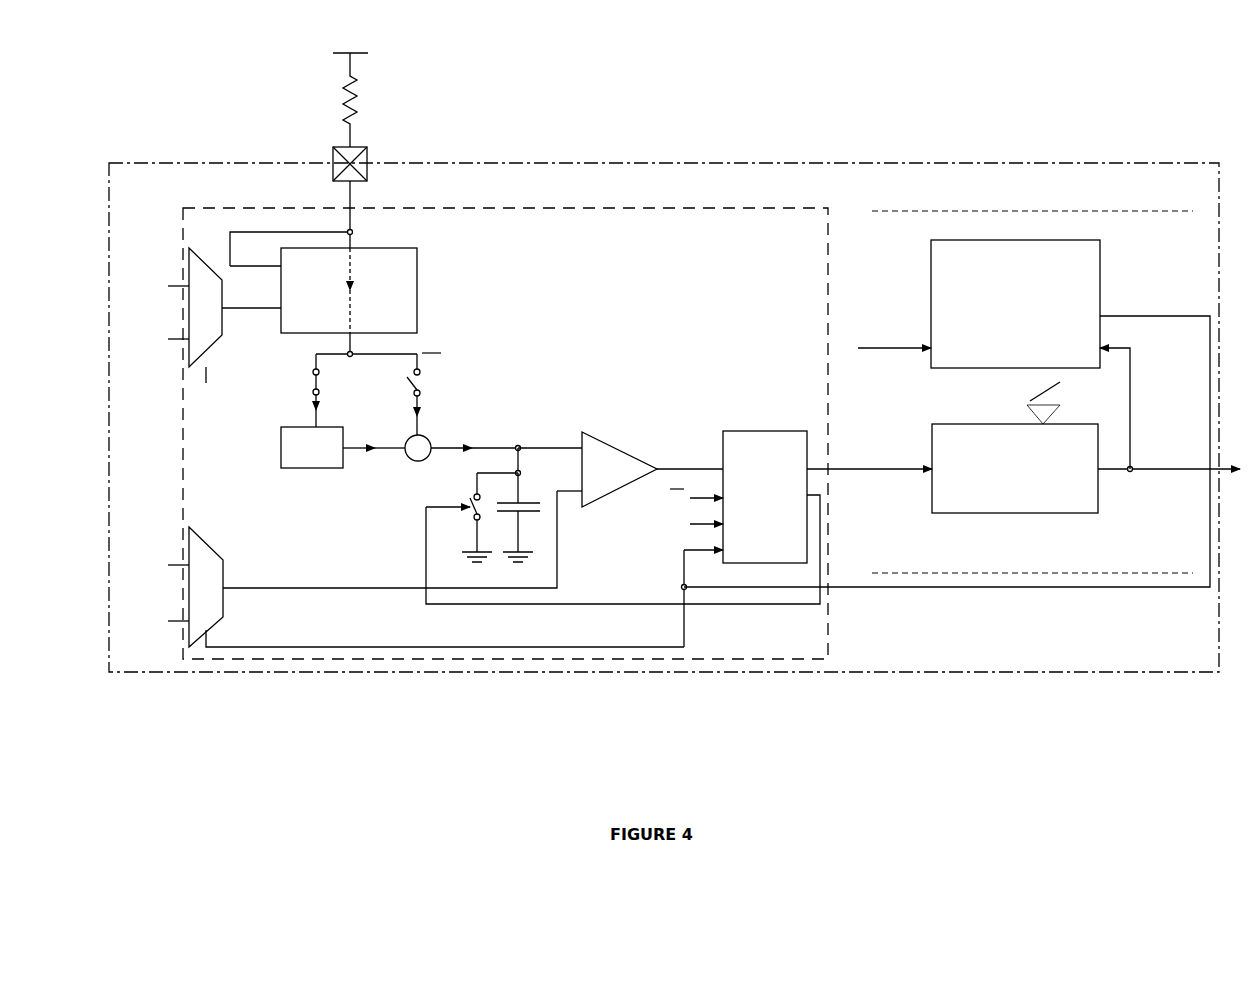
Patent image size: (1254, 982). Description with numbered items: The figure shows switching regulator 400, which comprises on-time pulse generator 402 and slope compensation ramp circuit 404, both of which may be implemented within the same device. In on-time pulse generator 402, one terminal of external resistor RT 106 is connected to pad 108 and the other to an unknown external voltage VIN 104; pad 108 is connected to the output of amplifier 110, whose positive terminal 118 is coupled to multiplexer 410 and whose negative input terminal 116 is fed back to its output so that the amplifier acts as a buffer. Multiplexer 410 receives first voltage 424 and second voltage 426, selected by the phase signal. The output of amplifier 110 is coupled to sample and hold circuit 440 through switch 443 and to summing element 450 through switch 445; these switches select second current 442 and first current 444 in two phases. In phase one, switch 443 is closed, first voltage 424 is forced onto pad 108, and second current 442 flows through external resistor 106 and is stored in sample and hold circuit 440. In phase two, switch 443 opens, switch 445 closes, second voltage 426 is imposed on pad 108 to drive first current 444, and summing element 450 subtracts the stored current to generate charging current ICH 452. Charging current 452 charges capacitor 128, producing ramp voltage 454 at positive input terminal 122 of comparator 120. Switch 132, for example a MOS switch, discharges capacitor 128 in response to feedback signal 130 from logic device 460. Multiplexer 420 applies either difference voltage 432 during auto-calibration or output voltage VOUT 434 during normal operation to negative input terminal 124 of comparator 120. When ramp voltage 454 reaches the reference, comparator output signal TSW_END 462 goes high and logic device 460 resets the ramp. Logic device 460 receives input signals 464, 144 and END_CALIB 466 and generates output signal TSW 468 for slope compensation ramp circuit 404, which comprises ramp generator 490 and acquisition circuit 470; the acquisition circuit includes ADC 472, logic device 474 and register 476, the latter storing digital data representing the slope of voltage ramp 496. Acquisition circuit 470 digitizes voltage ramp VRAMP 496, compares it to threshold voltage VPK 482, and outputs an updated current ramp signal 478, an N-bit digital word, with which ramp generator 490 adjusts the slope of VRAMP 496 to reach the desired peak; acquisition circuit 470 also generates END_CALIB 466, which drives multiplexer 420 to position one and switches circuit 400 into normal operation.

The external voltage VIN 104 is at (336, 48).
The external resistor RT 106 is at (335, 90).
The pad 108 is at (339, 140).
The amplifier 110 is at (398, 248).
The amplifier negative input 116 is at (276, 272).
The positive terminal of amplifier 118 is at (276, 314).
The comparator 120 is at (598, 432).
The positive input terminal of comparator 122 is at (578, 452).
The negative input terminal of comparator 124 is at (578, 488).
The capacitor C1 128 is at (526, 519).
The feedback signal 130 is at (426, 547).
The switch 132 is at (469, 500).
The input signal 144 is at (679, 524).
The switching regulator 400 is at (1082, 88).
The on-time pulse generator 402 is at (732, 207).
The slope compensation ramp circuit 404 is at (885, 211).
The multiplexer 410 is at (215, 348).
The multiplexer 420 is at (212, 550).
The voltage V1 424 is at (176, 280).
The voltage V2 426 is at (176, 334).
The voltage (V1-V2) 432 is at (176, 559).
The voltage VOUT 434 is at (176, 615).
The sample and hold circuit 440 is at (281, 450).
The current I2 442 is at (300, 403).
The switch 443 is at (322, 384).
The current I1 444 is at (410, 410).
The switch 445 is at (428, 388).
The summing element 450 is at (408, 460).
The charging current ICH 452 is at (453, 430).
The ramp voltage VR1 454 is at (515, 428).
The logic device 460 is at (763, 431).
The comparator output signal TSW_END 462 is at (688, 440).
The input signal 464 is at (679, 498).
The signal END_CALIB 466 is at (891, 481).
The output signal TSW 468 is at (850, 445).
The acquisition circuit 470 is at (940, 240).
The ADC 472 is at (1039, 252).
The logic device 474 is at (1025, 298).
The register 476 is at (1012, 345).
The current ramp signal 478 is at (1062, 398).
The threshold voltage VPK 482 is at (852, 322).
The ramp generator 490 is at (935, 424).
The slope compensation voltage ramp VRAMP 496 is at (1162, 448).